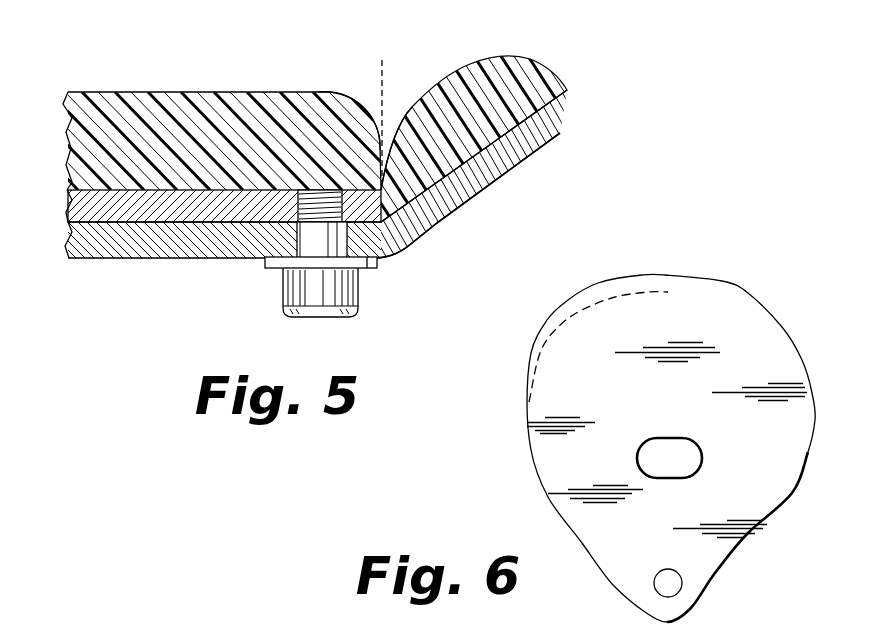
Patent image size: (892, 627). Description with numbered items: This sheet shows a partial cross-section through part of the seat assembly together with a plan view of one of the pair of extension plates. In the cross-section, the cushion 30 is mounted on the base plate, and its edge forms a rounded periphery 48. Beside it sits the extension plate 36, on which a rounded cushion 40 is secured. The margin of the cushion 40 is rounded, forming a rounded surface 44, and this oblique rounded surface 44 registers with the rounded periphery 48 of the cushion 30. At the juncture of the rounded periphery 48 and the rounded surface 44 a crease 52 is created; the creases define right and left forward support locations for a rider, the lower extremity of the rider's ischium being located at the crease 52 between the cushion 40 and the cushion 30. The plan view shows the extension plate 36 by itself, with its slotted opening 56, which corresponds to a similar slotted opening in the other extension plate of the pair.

In FIG. 5, the cushion 30 is at (308, 128).
In FIG. 5, the rounded periphery 48 is at (368, 118).
In FIG. 5, the rounded surface 44 is at (386, 160).
In FIG. 5, the rounded cushion 40 is at (474, 85).
In FIG. 5, the extension plate 36 is at (496, 163).
In FIG. 6, the extension plate 36 is at (748, 347).
In FIG. 5, the crease 52 is at (440, 226).
In FIG. 6, the slotted opening 56 is at (672, 478).